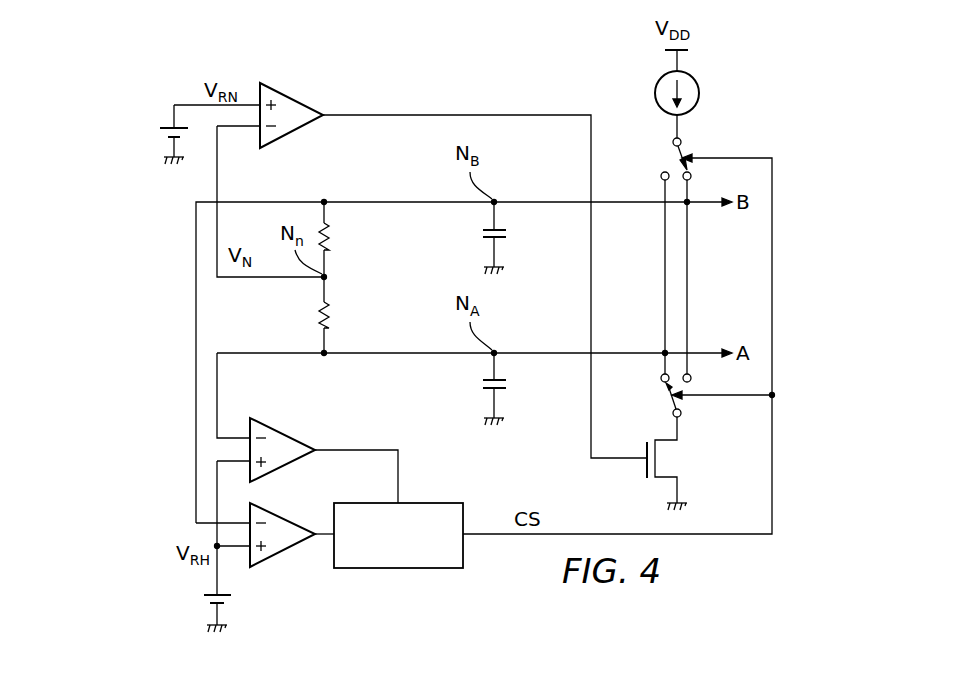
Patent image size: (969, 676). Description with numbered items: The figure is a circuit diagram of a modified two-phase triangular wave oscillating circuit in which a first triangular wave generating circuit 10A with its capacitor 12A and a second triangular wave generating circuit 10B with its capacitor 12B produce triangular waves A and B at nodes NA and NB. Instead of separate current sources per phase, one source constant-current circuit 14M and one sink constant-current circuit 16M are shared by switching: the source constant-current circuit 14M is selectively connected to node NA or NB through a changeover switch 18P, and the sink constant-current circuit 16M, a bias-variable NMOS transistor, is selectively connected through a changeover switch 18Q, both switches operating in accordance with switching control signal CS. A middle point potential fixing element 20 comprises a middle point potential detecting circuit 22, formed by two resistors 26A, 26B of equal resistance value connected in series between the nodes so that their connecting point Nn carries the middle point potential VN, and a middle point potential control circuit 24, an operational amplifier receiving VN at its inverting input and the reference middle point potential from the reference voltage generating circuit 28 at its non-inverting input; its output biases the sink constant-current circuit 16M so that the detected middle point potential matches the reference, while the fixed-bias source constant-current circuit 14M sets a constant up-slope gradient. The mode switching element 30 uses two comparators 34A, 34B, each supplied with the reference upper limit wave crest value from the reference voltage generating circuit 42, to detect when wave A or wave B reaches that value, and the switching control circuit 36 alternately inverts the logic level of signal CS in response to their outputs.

The middle point potential fixing element 20 is at (390, 164).
The middle point potential control circuit 24 is at (291, 94).
The reference voltage generating circuit 28 is at (158, 136).
The middle point potential detecting circuit 22 is at (324, 277).
The resistor 26B is at (331, 242).
The resistor 26A is at (331, 312).
The triangular wave generating circuit 10B is at (568, 281).
The capacitor 12B is at (481, 237).
The triangular wave generating circuit 10A is at (568, 401).
The capacitor 12A is at (481, 388).
The source constant-current circuit 14M is at (699, 92).
The changeover switch 18P is at (671, 158).
The changeover switch 18Q is at (669, 401).
The sink constant-current circuit 16M is at (642, 472).
The mode switching element 30 is at (444, 481).
The comparator 34A is at (282, 432).
The comparator 34B is at (284, 558).
The switching control circuit 36 is at (388, 570).
The reference voltage generating circuit 42 is at (203, 600).